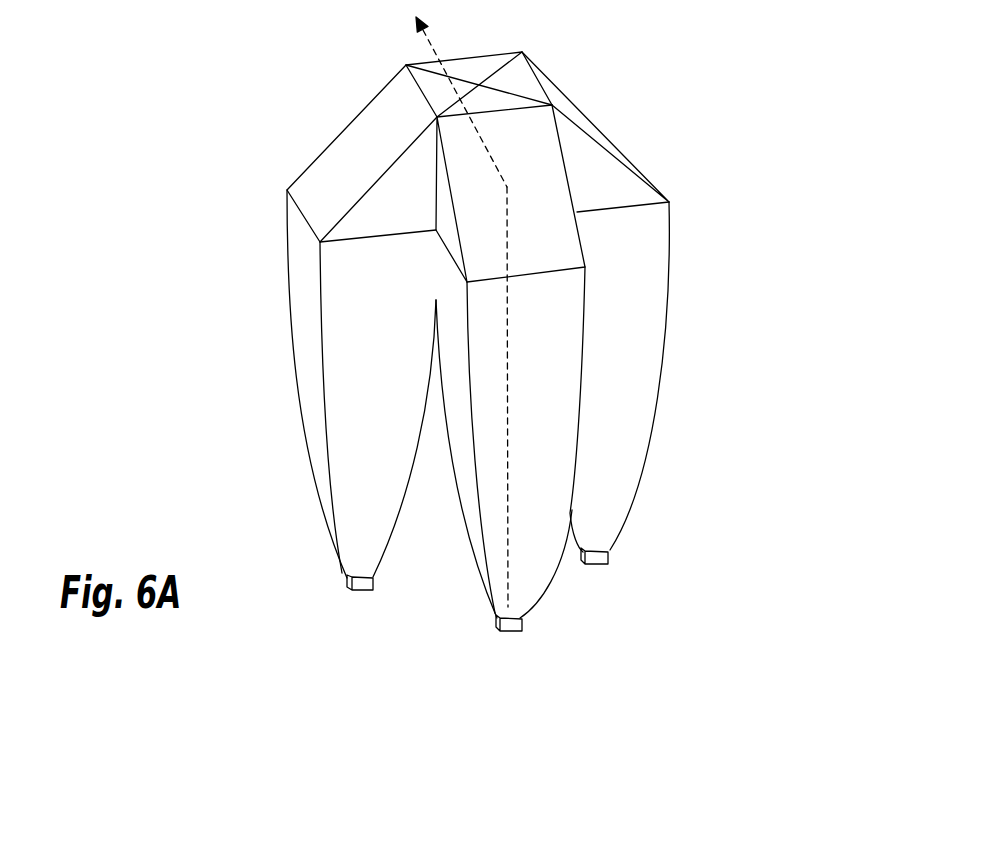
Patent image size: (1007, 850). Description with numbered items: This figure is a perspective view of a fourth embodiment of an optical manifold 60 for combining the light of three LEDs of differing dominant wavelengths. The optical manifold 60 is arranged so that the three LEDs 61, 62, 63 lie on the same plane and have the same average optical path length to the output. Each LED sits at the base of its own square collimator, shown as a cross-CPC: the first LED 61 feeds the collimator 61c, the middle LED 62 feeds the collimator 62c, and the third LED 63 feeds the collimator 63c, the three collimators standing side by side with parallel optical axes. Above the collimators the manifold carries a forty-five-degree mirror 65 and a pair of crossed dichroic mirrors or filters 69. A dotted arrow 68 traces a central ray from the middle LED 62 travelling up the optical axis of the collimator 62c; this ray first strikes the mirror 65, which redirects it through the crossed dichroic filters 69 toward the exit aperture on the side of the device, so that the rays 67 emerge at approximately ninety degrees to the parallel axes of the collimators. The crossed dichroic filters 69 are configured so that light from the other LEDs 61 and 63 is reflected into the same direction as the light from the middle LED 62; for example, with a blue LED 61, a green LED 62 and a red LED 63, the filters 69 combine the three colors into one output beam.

The optical manifold 60 is at (752, 606).
The LED 61 is at (352, 597).
The square collimator 61c is at (307, 392).
The LED 62 is at (510, 632).
The square collimator 62c is at (453, 307).
The LED 63 is at (612, 552).
The square collimator 63c is at (635, 292).
The 45-degree mirror 65 is at (532, 175).
The rays 67 is at (423, 45).
The dotted arrow 68 is at (513, 397).
The crossed dichroic mirrors/filters 69 is at (515, 90).